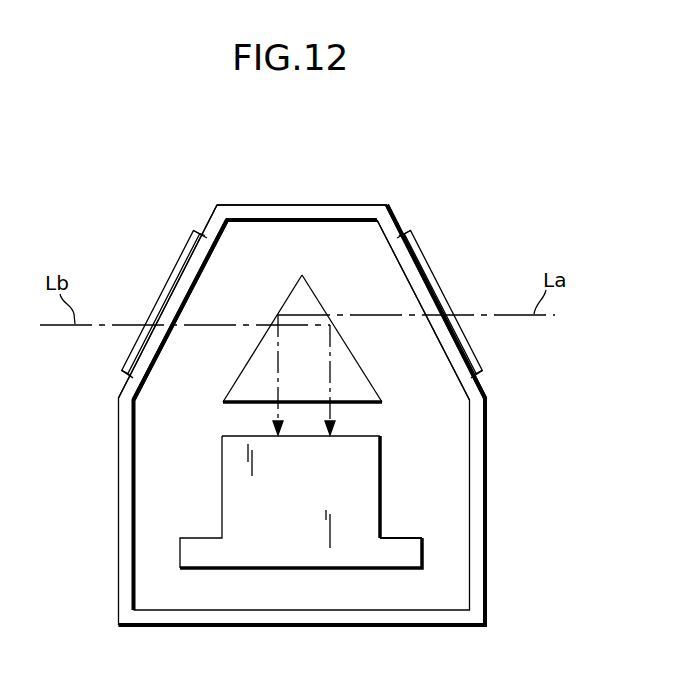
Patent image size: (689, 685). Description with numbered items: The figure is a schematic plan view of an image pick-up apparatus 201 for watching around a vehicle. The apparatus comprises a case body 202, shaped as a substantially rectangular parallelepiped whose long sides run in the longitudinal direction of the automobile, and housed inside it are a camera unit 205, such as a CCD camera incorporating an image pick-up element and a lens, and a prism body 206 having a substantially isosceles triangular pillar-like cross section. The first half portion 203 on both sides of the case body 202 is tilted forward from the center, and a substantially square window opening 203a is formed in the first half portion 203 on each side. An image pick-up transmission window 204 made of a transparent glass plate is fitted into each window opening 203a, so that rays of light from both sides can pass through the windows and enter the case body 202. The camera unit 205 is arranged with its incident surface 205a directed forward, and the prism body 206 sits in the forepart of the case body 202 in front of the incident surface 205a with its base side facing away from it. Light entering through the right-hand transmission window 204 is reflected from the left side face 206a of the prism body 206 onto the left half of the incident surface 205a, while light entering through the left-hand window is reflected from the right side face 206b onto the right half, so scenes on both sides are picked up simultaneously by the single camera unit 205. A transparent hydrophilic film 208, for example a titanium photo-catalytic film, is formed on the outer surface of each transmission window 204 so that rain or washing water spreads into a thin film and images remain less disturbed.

The image pick-up apparatus 201 is at (303, 200).
The case body 202 is at (485, 538).
The first half portion 203 is at (207, 222).
The window opening 203a is at (127, 366).
The image pick-up transmission window 204 is at (200, 278).
The camera unit 205 is at (296, 570).
The incident surface 205a is at (360, 435).
The prism body 206 is at (361, 356).
The left side face 206a is at (240, 378).
The right side face 206b is at (393, 356).
The hydrophilic film 208 is at (167, 288).